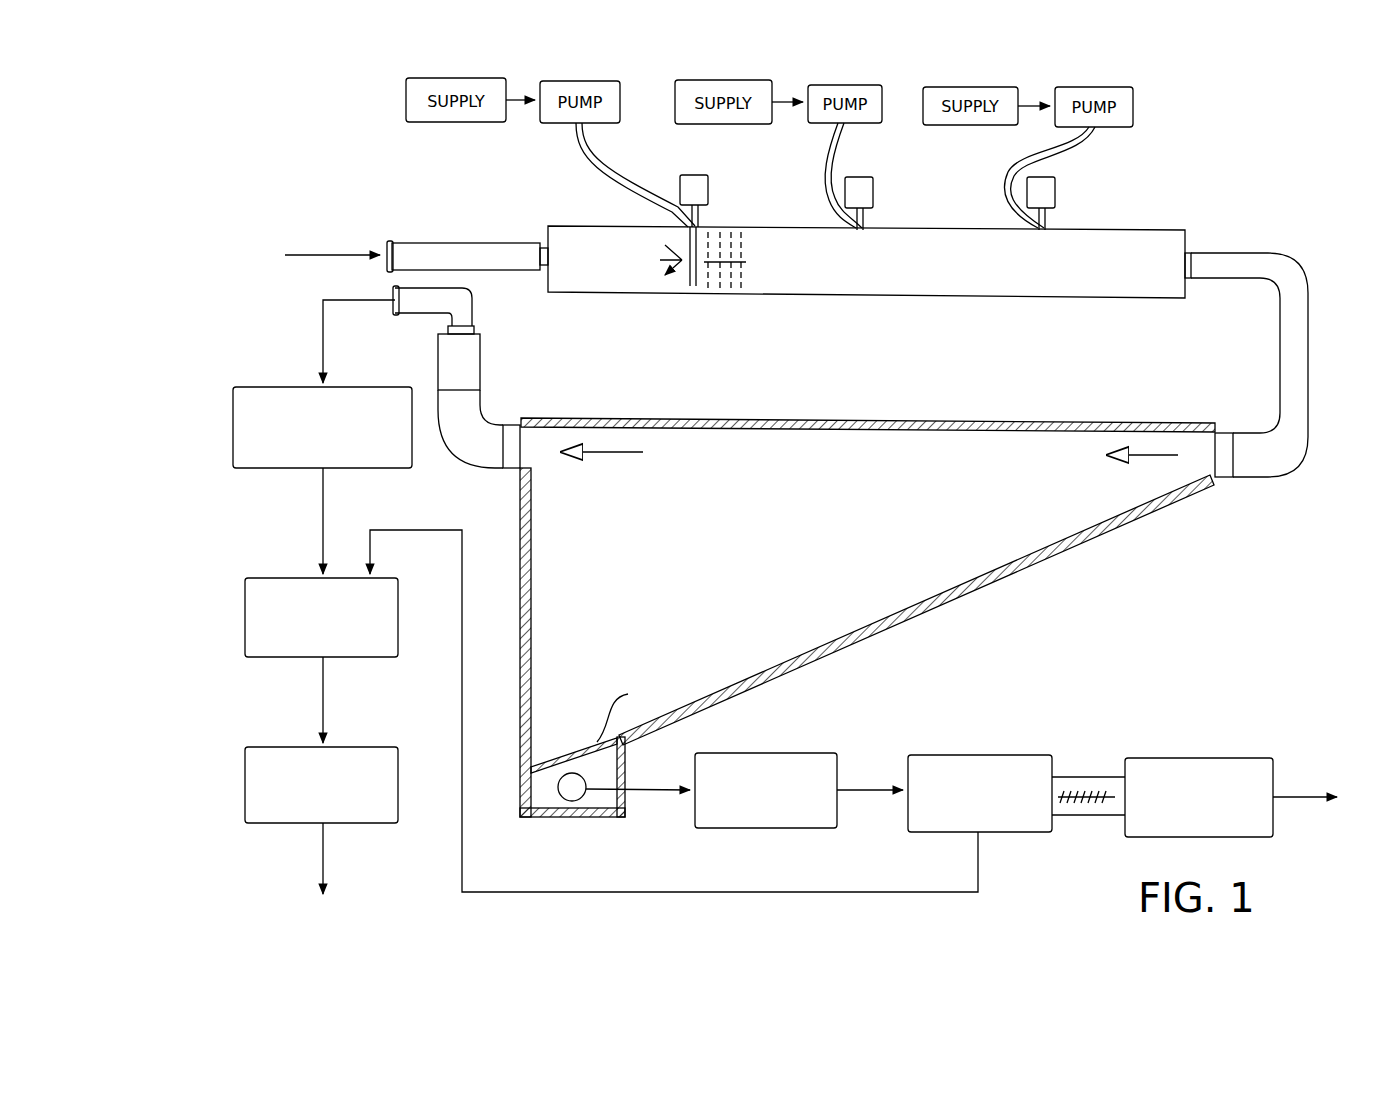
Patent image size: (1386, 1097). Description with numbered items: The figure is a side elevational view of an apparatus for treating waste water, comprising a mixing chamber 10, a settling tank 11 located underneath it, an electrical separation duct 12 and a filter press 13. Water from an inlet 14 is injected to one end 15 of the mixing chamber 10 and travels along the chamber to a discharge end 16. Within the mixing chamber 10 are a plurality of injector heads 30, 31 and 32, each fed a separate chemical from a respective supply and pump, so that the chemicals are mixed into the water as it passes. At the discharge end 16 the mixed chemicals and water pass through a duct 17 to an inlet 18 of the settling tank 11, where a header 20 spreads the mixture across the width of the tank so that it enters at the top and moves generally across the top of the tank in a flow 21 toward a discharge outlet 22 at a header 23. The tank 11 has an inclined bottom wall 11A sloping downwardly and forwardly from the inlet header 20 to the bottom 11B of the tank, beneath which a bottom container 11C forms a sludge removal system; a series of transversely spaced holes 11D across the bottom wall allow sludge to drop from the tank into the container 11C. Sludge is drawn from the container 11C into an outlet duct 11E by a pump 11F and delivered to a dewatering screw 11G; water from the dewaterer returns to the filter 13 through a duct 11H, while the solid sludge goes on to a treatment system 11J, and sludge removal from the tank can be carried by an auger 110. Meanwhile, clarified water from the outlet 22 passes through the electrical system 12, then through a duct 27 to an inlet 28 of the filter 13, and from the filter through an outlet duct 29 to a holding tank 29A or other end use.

The mixing chamber 10 is at (1118, 226).
The settling tank 11 is at (853, 608).
The inclined bottom wall 11A is at (926, 596).
The bottom of the tank 11B is at (636, 711).
The bottom container 11C is at (565, 822).
The transversely spaced holes 11D is at (558, 764).
The outlet duct 11E is at (586, 797).
The pump 11F is at (785, 750).
The dewatering screw 11G is at (996, 752).
The duct 11H is at (808, 890).
The treatment system 11J is at (1210, 754).
The auger 110 is at (1077, 777).
The electrical separation duct 12 is at (268, 384).
The filter press 13 is at (284, 660).
The inlet 14 is at (452, 242).
The end of the mixing chamber 15 is at (565, 225).
The discharge end 16 is at (1172, 228).
The duct 17 is at (1255, 256).
The inlet of the settling chamber 18 is at (1243, 430).
The header 20 is at (1222, 480).
The flow 21 is at (1140, 455).
The discharge outlet 22 is at (323, 328).
The header 23 is at (507, 472).
The duct 27 is at (323, 506).
The inlet of the filter 28 is at (318, 566).
The outlet duct 29 is at (323, 686).
The holding tank 29A is at (290, 825).
The injector head 30 is at (711, 200).
The injector head 31 is at (878, 200).
The injector head 32 is at (1060, 200).